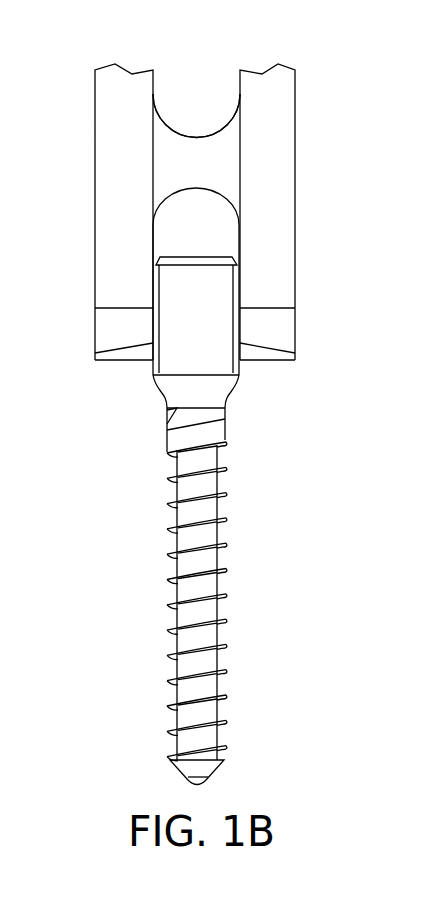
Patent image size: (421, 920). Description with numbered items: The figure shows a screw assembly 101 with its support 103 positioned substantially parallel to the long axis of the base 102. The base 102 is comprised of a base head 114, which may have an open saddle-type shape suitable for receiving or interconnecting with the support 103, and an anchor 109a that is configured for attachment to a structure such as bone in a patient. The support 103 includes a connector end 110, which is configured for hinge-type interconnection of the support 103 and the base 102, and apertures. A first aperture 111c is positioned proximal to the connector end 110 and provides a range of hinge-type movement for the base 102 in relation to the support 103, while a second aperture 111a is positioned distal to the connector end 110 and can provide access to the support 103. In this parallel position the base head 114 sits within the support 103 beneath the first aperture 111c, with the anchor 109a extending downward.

The screw assembly 101 is at (313, 245).
The base 102 is at (153, 596).
The support 103 is at (297, 121).
The anchor 109a is at (190, 668).
The connector end 110 is at (113, 338).
The second aperture 111a is at (200, 85).
The first aperture 111c is at (185, 221).
The base head 114 is at (180, 359).